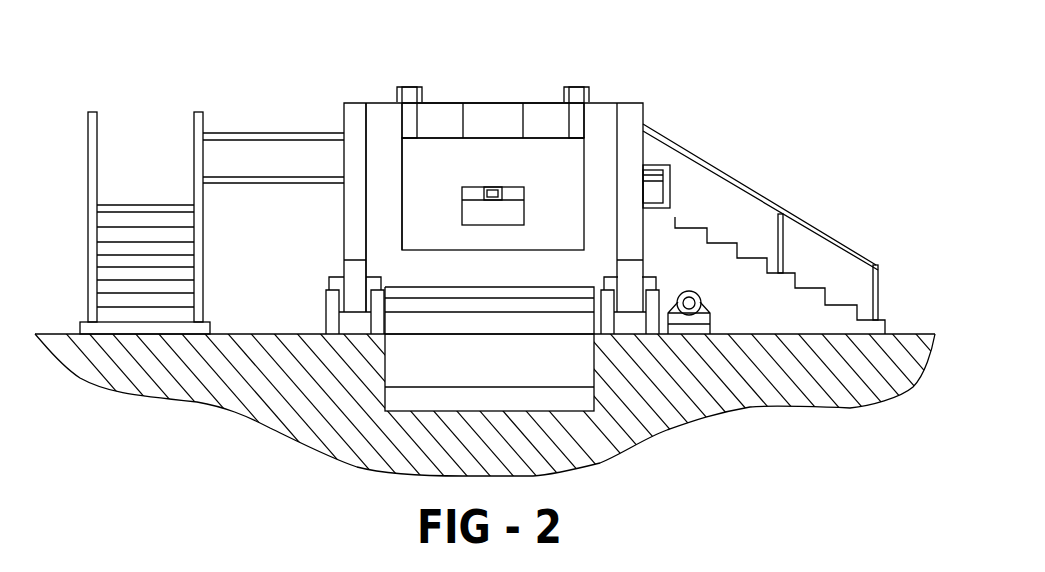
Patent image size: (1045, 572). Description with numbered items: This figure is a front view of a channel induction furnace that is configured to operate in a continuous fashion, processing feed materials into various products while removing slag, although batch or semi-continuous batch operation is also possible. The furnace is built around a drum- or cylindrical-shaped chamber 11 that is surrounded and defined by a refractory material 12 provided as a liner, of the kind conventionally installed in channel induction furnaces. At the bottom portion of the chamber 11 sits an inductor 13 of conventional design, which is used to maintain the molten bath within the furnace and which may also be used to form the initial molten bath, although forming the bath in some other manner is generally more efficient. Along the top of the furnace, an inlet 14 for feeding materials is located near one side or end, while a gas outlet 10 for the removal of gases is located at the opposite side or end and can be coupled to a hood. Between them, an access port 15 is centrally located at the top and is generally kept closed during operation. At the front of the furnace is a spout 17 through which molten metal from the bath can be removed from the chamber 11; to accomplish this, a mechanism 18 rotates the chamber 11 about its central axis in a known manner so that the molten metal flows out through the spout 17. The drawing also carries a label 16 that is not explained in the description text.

The gas outlet 10 is at (574, 87).
The drum-shaped chamber 11 is at (398, 158).
The refractory material 12 is at (437, 277).
The inductor 13 is at (441, 370).
The inlet 14 is at (409, 87).
The access port 15 is at (500, 117).
The access stairway with handrail 16 is at (764, 185).
The spout 17 is at (517, 194).
The rotating mechanism 18 is at (666, 280).